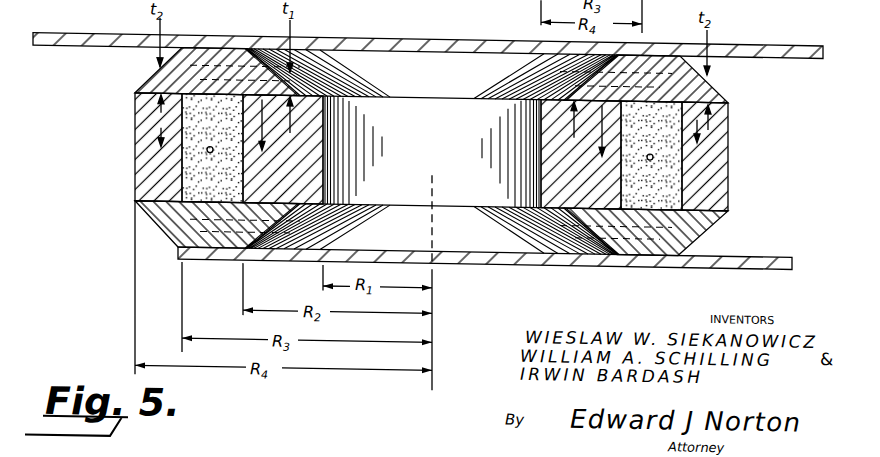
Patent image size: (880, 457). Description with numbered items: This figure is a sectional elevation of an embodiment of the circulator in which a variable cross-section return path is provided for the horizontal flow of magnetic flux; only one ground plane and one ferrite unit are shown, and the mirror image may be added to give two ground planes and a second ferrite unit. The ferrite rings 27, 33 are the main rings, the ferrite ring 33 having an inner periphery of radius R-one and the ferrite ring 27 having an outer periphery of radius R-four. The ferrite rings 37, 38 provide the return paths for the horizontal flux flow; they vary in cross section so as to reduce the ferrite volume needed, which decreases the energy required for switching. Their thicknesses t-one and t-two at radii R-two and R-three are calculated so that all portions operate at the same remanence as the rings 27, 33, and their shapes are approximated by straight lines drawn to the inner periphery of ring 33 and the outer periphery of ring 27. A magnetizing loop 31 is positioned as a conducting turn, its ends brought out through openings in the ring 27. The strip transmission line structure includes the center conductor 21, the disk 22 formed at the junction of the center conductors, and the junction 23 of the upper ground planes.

The center conductor 21 is at (497, 265).
The disk 22 is at (463, 256).
The junction of the upper ground planes 23 is at (455, 32).
The ferrite ring 27 is at (138, 128).
The magnetizing loop 31 is at (207, 150).
The ferrite ring 33 is at (577, 178).
The ferrite ring 37 is at (147, 75).
The ferrite ring 38 is at (163, 230).